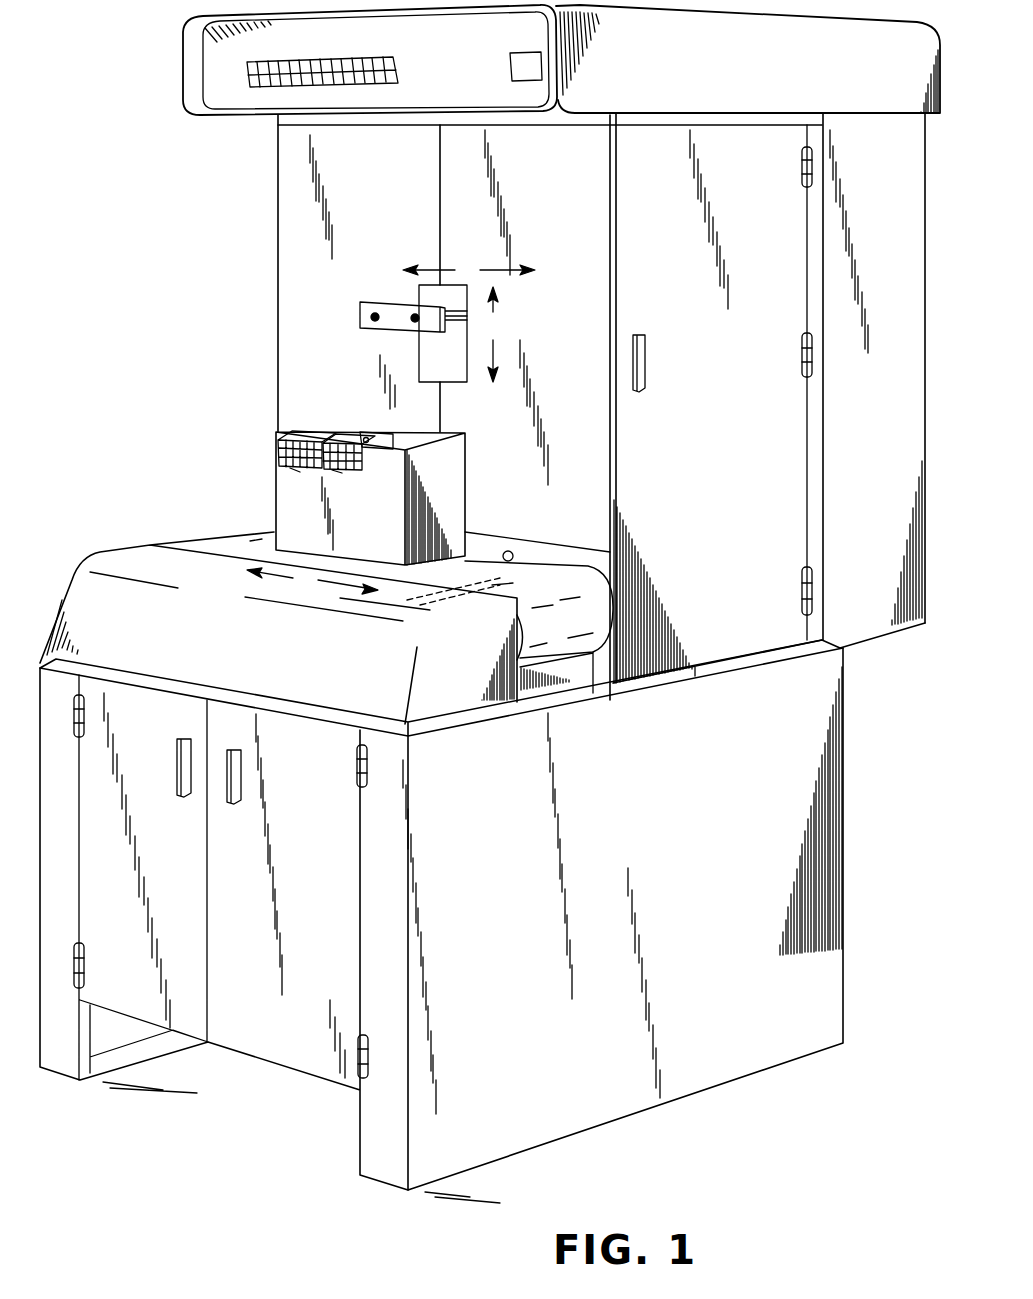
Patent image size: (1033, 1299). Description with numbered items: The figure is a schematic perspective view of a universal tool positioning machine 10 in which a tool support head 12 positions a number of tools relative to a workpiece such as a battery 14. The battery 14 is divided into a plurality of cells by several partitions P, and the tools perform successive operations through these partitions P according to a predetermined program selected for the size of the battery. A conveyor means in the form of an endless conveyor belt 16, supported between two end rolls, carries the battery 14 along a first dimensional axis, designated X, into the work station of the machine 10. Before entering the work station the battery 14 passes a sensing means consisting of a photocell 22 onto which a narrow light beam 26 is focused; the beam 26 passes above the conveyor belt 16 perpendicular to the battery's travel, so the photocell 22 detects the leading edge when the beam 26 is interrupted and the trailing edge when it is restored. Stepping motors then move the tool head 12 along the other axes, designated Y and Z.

The universal tool positioning machine 10 is at (243, 338).
The tool support head 12 is at (360, 318).
The battery 14 is at (377, 520).
The conveyor belt 16 is at (597, 617).
The photocell 22 is at (513, 555).
The light beam 26 is at (480, 583).
The partitions P is at (378, 428).